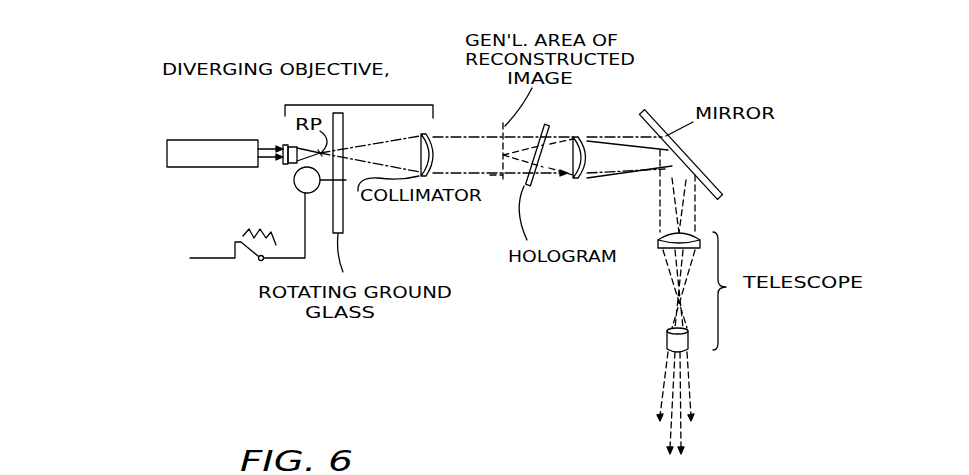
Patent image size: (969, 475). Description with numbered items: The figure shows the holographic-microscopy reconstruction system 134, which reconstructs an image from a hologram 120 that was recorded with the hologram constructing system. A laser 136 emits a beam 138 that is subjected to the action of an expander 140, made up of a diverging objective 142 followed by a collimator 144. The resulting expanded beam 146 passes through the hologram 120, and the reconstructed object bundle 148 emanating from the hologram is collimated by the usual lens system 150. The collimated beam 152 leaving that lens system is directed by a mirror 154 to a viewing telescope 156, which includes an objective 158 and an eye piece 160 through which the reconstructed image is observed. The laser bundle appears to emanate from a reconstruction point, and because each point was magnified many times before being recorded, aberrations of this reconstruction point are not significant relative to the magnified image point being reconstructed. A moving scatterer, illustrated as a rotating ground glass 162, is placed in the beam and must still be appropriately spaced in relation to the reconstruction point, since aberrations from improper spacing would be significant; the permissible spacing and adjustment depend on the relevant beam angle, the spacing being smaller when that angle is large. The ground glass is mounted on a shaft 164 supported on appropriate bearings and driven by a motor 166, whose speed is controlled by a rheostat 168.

The laser 136 is at (167, 150).
The beam 138 is at (276, 146).
The diverging objective 142 is at (283, 143).
The expander 140 is at (345, 105).
The collimator 144 is at (432, 152).
The expanded beam 146 is at (495, 177).
The reconstructed object bundle 148 is at (556, 137).
The hologram 120 is at (531, 182).
The lens system 150 is at (591, 140).
The collimated beam 152 is at (632, 172).
The mirror 154 is at (688, 158).
The viewing telescope 156 is at (702, 302).
The objective 158 is at (660, 249).
The eye piece 160 is at (667, 342).
The rotating ground glass 162 is at (343, 213).
The shaft 164 is at (322, 183).
The motor 166 is at (294, 183).
The rheostat 168 is at (241, 241).
The reconstruction system 134 is at (480, 290).